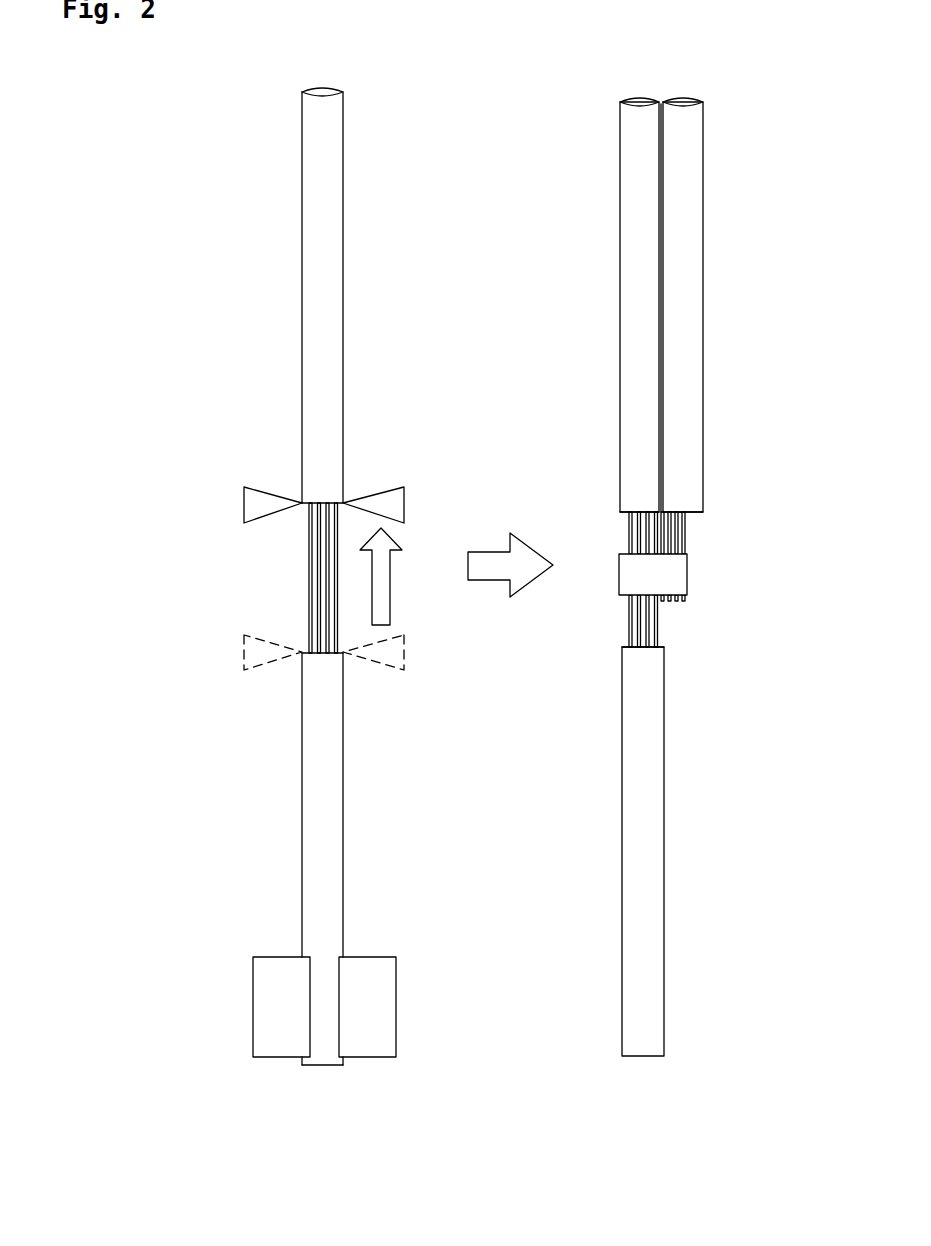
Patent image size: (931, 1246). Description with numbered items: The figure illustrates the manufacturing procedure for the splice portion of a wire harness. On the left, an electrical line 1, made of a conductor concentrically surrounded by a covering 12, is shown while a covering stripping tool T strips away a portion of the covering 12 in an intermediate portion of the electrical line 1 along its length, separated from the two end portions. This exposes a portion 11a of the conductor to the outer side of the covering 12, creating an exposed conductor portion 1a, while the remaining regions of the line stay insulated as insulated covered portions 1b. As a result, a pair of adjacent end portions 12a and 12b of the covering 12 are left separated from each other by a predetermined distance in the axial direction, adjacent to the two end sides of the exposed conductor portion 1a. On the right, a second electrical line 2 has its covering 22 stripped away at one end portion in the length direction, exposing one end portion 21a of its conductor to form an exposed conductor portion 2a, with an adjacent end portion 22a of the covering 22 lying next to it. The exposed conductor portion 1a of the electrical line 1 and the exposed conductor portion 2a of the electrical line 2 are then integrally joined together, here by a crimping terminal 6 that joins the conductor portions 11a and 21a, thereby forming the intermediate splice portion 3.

The electrical line 1 is at (290, 217).
The exposed conductor portion 1a is at (309, 595).
The insulated covered portion 1b is at (302, 299).
The exposed portion of conductor 11a is at (320, 552).
The covering 12 is at (335, 310).
The adjacent end portion of covering 12a is at (307, 490).
The adjacent end portion of covering 12b is at (307, 670).
The electrical line 2 is at (708, 225).
The exposed conductor portion 2a is at (693, 525).
The end portion of conductor 21a is at (688, 542).
The covering 22 is at (697, 431).
The adjacent end portion of covering 22a is at (697, 500).
The intermediate splice portion 3 is at (702, 578).
The crimping terminal 6 is at (683, 583).
The covering stripping tool T is at (380, 490).